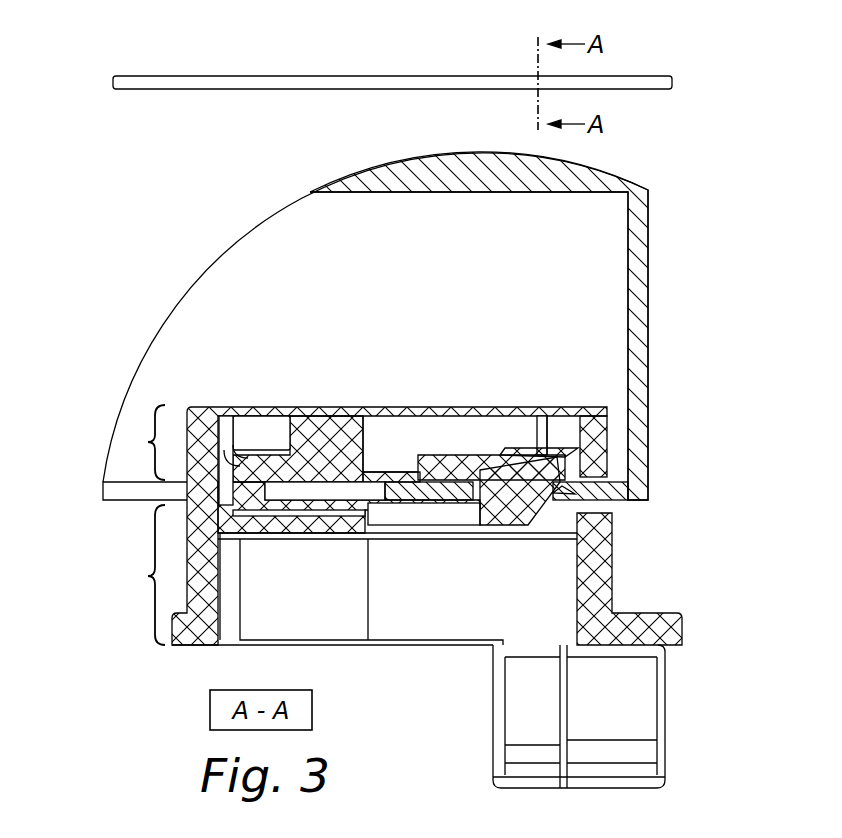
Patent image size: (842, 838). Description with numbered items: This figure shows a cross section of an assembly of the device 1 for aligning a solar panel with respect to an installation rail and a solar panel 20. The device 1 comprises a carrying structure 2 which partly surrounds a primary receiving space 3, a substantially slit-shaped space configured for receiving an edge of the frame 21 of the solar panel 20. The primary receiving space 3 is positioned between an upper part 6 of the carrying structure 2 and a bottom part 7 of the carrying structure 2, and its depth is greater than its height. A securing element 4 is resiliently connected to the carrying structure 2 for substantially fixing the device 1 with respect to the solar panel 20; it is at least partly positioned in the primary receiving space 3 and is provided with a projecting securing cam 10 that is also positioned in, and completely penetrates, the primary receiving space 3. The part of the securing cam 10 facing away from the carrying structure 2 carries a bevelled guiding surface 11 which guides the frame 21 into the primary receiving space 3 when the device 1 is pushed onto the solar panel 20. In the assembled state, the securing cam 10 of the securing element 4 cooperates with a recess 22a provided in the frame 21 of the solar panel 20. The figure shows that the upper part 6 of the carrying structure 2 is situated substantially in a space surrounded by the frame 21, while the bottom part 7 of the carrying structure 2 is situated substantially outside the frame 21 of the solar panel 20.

The device 1 is at (703, 629).
The carrying structure 2 is at (198, 393).
The primary receiving space 3 is at (320, 490).
The securing element 4 is at (464, 439).
The upper part 6 is at (136, 442).
The bottom part 7 is at (136, 575).
The securing cam 10 is at (500, 512).
The bevelled guiding surface 11 is at (565, 492).
The solar panel 20 is at (101, 70).
The frame 21 is at (668, 296).
The recess 22a is at (578, 502).